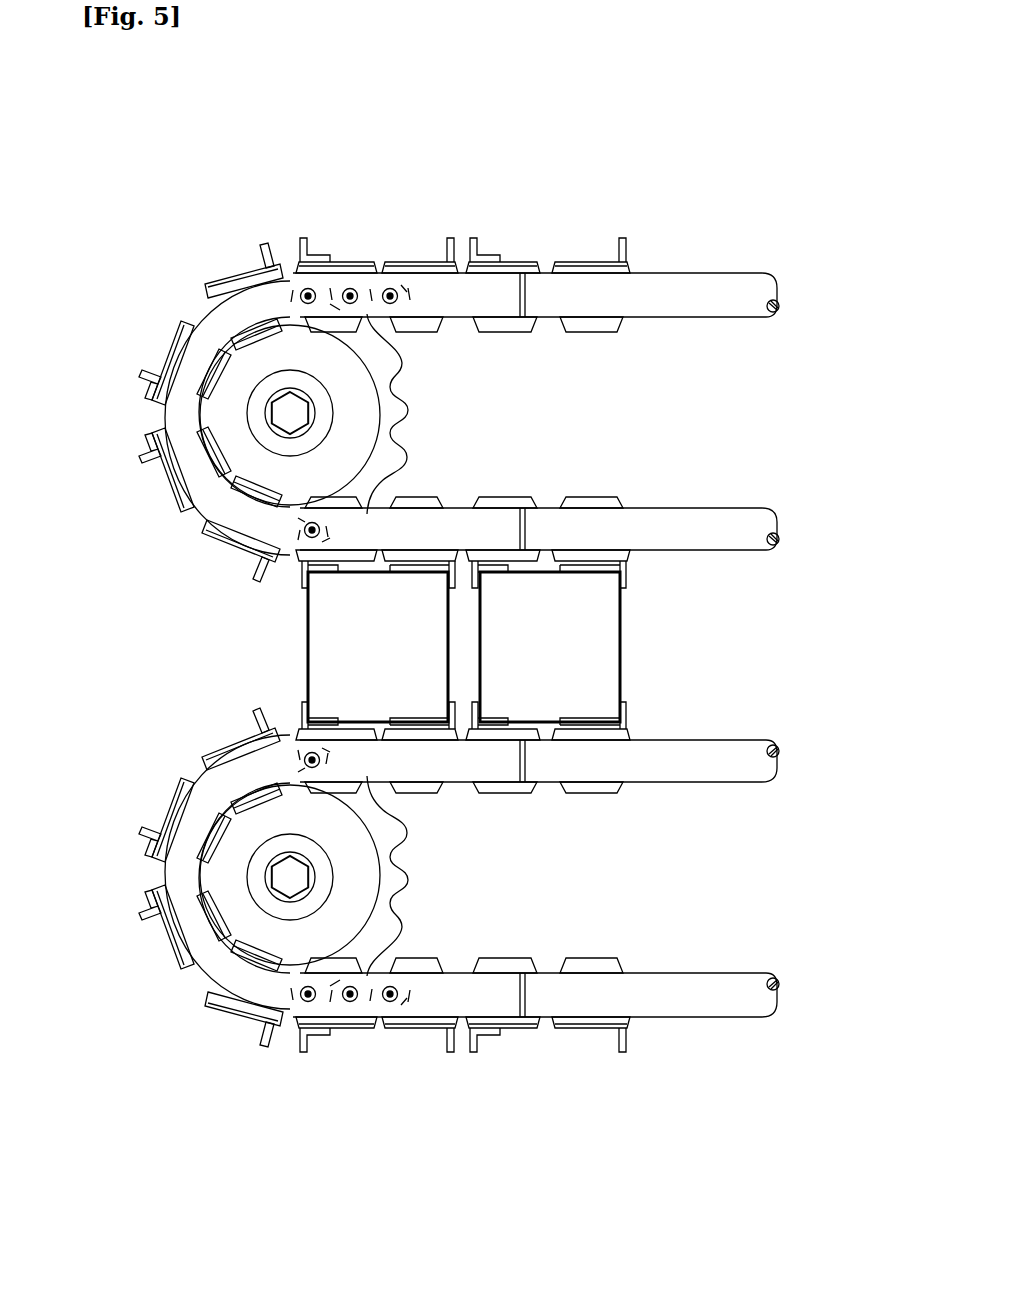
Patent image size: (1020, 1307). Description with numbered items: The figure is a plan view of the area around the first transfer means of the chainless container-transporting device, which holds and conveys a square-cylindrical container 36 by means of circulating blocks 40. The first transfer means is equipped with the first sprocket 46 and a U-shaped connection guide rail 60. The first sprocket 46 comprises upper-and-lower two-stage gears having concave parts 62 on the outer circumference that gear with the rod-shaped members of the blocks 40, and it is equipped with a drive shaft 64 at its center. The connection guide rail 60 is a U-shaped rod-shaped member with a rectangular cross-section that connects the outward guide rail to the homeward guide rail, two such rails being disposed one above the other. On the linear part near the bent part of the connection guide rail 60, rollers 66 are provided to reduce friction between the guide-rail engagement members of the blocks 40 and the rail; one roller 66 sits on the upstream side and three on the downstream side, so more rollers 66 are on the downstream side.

The square-cylindrical container 36 is at (307, 653).
The block 40 is at (593, 232).
The first sprocket 46 is at (453, 431).
The connection guide rail 60 is at (466, 295).
The concave part 62 is at (412, 332).
The drive shaft 64 is at (252, 413).
The roller 66 is at (297, 240).